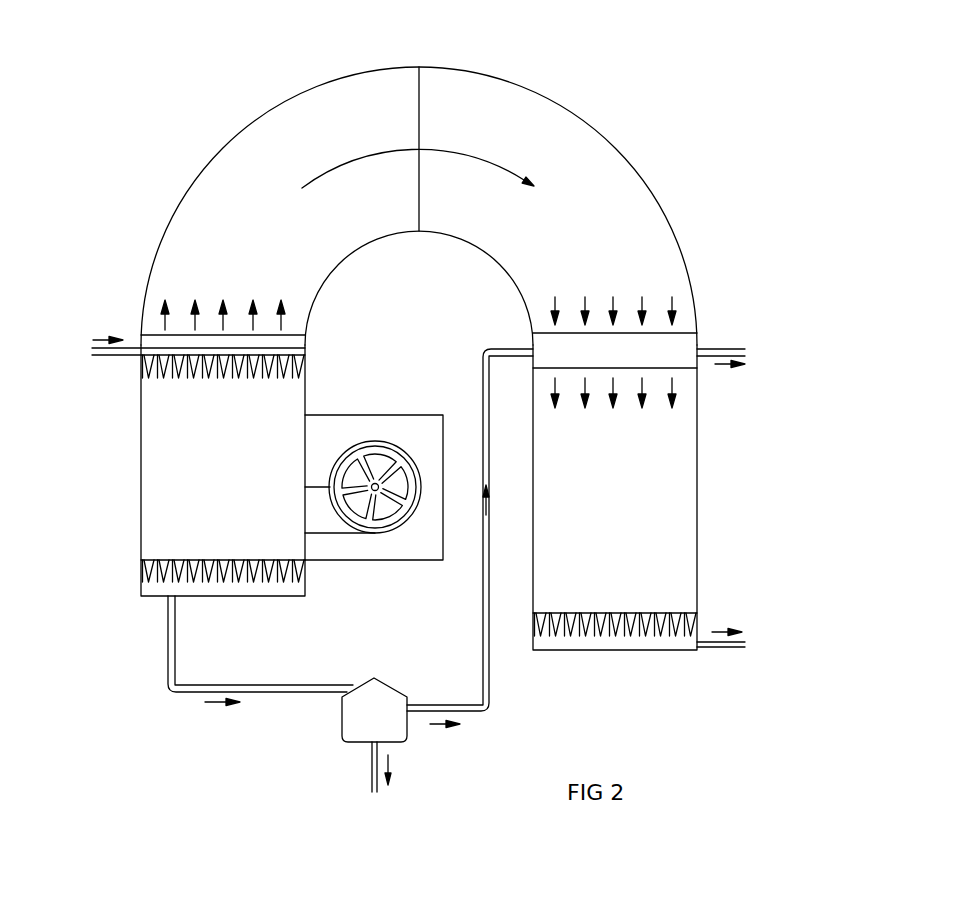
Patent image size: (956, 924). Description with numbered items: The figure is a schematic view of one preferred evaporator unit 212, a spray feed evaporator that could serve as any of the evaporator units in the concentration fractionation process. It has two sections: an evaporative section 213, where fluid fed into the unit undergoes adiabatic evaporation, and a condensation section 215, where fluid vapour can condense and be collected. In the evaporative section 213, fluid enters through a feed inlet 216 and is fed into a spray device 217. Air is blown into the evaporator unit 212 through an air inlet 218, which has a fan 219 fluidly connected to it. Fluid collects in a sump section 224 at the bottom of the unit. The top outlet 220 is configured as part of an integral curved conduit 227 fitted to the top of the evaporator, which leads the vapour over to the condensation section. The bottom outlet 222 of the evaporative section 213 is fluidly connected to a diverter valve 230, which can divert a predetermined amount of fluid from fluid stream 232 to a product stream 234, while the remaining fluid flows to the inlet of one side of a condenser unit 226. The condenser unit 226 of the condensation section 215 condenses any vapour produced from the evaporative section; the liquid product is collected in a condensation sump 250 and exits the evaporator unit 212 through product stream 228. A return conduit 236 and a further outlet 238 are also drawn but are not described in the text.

The evaporator unit 212 is at (210, 755).
The evaporative section 213 is at (175, 472).
The condensation section 215 is at (673, 483).
The feed inlet 216 is at (122, 356).
The spray device 217 is at (283, 354).
The air inlet 218 is at (322, 515).
The fan 219 is at (400, 457).
The top outlet 220 is at (148, 340).
The bottom outlet 222 is at (170, 598).
The sump section 224 is at (152, 588).
The condenser unit 226 is at (676, 348).
The integral curved conduit 227 is at (362, 107).
The product stream 228 is at (717, 650).
The diverter valve 230 is at (397, 722).
The fluid stream 232 is at (308, 692).
The product stream 234 is at (371, 770).
The return conduit 236 is at (478, 652).
The second chamber outlet 238 is at (718, 348).
The condensation sump 250 is at (652, 640).